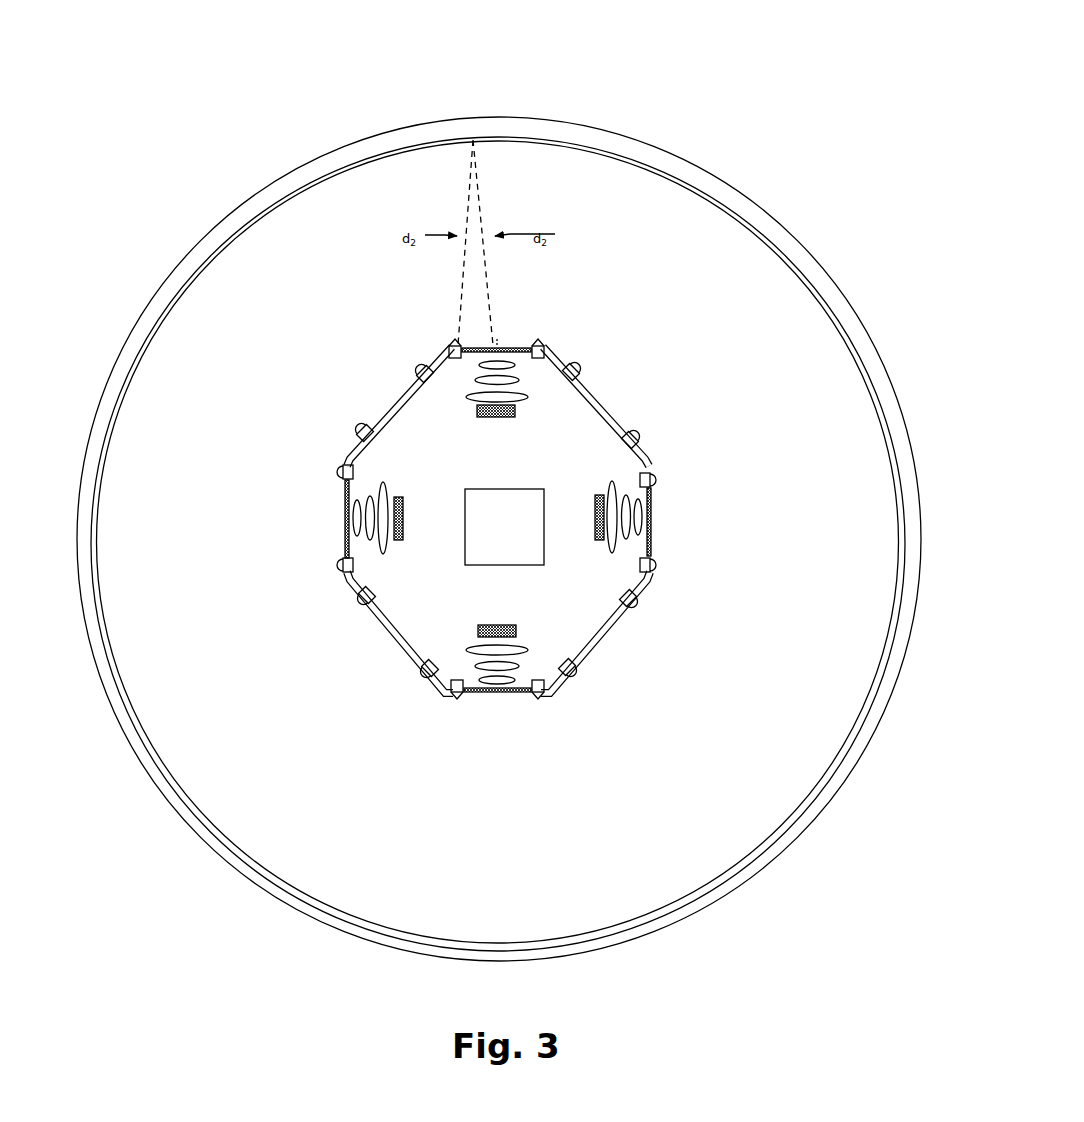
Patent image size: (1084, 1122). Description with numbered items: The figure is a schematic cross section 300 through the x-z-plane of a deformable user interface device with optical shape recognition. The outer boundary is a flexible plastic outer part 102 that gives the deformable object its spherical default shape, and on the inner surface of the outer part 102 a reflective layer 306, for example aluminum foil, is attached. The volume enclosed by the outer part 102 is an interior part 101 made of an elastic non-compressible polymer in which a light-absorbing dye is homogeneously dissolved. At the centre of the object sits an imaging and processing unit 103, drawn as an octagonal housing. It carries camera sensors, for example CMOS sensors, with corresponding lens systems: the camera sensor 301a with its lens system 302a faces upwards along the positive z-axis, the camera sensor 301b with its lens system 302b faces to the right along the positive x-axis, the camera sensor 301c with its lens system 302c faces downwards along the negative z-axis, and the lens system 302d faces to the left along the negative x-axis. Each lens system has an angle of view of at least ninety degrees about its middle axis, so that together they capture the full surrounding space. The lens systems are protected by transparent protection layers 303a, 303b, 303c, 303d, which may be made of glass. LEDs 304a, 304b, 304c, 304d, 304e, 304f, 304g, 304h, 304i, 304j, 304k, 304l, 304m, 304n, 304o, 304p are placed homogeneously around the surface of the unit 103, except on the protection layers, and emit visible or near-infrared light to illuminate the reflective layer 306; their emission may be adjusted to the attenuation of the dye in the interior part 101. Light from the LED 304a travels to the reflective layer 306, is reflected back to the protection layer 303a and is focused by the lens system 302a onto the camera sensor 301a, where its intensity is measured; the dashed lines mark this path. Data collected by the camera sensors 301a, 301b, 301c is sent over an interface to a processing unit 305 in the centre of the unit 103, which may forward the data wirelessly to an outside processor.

The cross section 300 is at (558, 62).
The interior part 101 is at (595, 177).
The outer part 102 is at (752, 203).
The reflective layer 306 is at (811, 282).
The imaging and processing unit 103 is at (243, 434).
The processing unit 305 is at (504, 527).
The camera sensor 301a is at (483, 418).
The camera sensor 301b is at (601, 541).
The camera sensor 301c is at (402, 541).
The lens system 302a is at (465, 410).
The lens system 302b is at (601, 477).
The lens system 302c is at (523, 636).
The lens system 302d is at (384, 470).
The transparent protection layer 303a is at (519, 347).
The transparent protection layer 303b is at (651, 520).
The transparent protection layer 303c is at (507, 696).
The transparent protection layer 303d is at (345, 523).
The LED 304a is at (455, 340).
The LED 304b is at (541, 342).
The LED 304c is at (578, 373).
The LED 304d is at (641, 440).
The LED 304e is at (658, 481).
The LED 304f is at (656, 564).
The LED 304g is at (640, 604).
The LED 304h is at (577, 671).
The LED 304i is at (540, 698).
The LED 304j is at (450, 700).
The LED 304k is at (422, 670).
The LED 304l is at (358, 604).
The LED 304m is at (343, 570).
The LED 304n is at (343, 466).
The LED 304o is at (362, 432).
The LED 304p is at (418, 368).